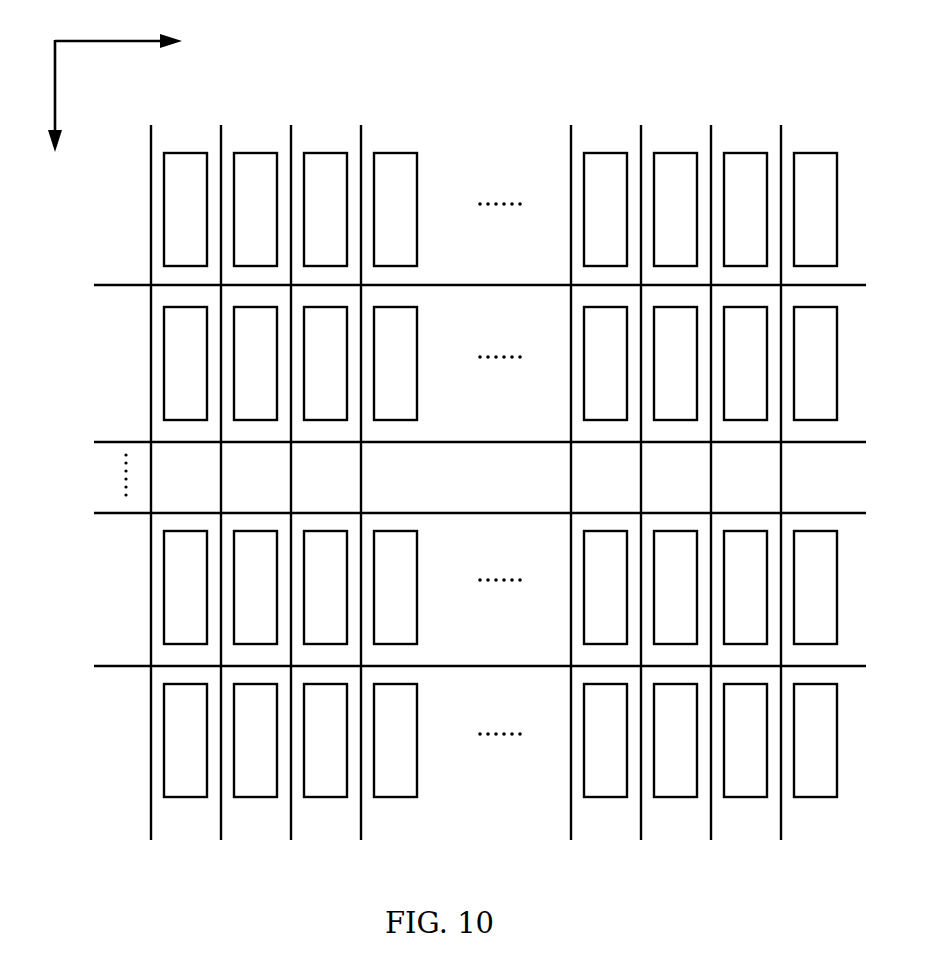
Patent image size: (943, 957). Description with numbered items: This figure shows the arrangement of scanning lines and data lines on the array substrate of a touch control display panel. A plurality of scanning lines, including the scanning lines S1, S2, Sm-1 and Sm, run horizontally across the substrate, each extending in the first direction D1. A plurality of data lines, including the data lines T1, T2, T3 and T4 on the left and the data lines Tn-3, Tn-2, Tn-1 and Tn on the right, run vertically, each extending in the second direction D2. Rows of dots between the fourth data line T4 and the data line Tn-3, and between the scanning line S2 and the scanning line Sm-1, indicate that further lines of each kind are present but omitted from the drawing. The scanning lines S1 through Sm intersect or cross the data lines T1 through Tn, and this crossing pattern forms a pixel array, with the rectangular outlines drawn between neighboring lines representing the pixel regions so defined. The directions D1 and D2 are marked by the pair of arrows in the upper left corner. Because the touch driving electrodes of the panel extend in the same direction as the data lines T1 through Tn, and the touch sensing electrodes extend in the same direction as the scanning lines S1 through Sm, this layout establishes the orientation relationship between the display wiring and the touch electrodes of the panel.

The first direction D1 is at (118, 27).
The second direction D2 is at (37, 96).
The data line T1 is at (151, 469).
The data line T2 is at (221, 469).
The data line T3 is at (291, 469).
The data line T4 is at (361, 469).
The data line Tn-3 is at (574, 469).
The data line Tn-2 is at (644, 469).
The data line Tn-1 is at (714, 469).
The data line Tn is at (783, 469).
The scanning line S1 is at (459, 284).
The scanning line S2 is at (459, 442).
The scanning line Sm-1 is at (456, 514).
The scanning line Sm is at (459, 669).